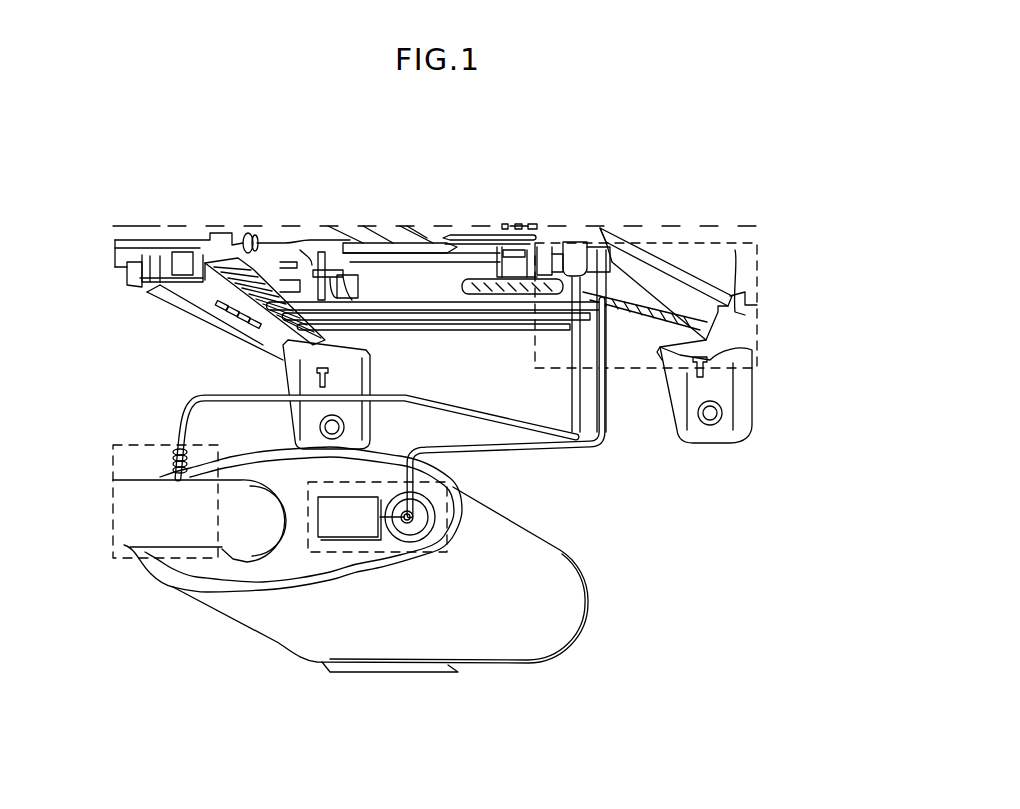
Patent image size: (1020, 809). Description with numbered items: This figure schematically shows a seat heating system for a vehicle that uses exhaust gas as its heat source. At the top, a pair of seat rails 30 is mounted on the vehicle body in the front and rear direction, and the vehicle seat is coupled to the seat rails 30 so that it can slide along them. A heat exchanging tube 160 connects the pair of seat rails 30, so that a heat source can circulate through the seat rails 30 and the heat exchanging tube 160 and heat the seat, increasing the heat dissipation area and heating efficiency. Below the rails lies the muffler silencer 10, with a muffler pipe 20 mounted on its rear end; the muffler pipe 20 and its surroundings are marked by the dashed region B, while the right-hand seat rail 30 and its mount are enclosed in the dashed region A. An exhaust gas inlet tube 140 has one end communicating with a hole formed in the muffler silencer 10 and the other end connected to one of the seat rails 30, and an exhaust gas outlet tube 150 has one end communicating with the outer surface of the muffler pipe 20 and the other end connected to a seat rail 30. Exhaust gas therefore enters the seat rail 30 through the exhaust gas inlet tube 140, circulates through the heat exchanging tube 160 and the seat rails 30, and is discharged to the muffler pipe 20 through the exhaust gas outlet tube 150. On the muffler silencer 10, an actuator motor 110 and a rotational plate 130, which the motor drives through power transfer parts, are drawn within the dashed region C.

The muffler silencer 10 is at (531, 630).
The muffler pipe 20 is at (132, 513).
The seat rail 30 is at (273, 341).
The actuator motor 110 is at (347, 528).
The rotational plate 130 is at (412, 533).
The exhaust gas inlet tube 140 is at (540, 450).
The exhaust gas outlet tube 150 is at (183, 412).
The heat exchanging tube 160 is at (470, 342).
The region A is at (760, 300).
The region B is at (178, 560).
The region C is at (450, 528).